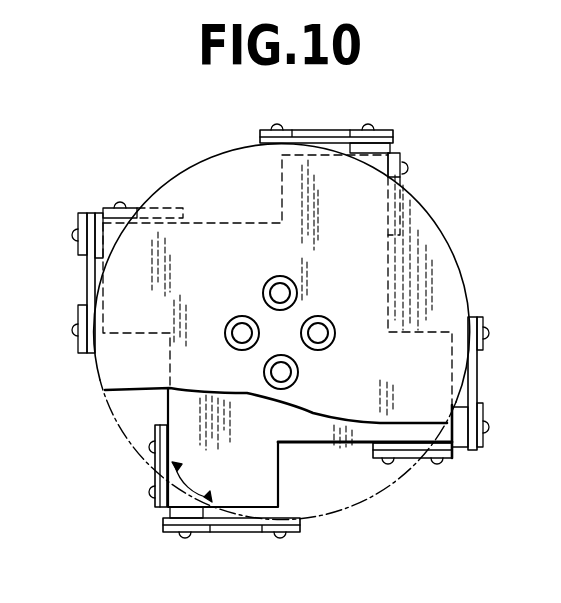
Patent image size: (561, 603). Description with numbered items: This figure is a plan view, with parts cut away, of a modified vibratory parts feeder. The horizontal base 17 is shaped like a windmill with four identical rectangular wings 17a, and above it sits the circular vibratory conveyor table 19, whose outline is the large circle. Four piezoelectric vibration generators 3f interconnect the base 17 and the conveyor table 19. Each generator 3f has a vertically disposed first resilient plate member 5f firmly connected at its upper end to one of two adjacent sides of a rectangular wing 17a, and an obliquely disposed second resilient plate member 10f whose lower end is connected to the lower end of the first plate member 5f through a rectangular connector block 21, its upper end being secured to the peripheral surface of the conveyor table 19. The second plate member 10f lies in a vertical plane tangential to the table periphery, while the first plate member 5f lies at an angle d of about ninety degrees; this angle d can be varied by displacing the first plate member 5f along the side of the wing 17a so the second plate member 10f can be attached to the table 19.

The circular vibratory conveyor table 19 is at (450, 241).
The horizontal base 17 is at (282, 463).
The rectangular wing 17a is at (282, 187).
The second resilient plate member 10f is at (327, 130).
The piezoelectric vibration generator 3f is at (404, 168).
The first resilient plate member 5f is at (131, 216).
The rectangular connector block 21 is at (99, 228).
The angle d is at (193, 476).